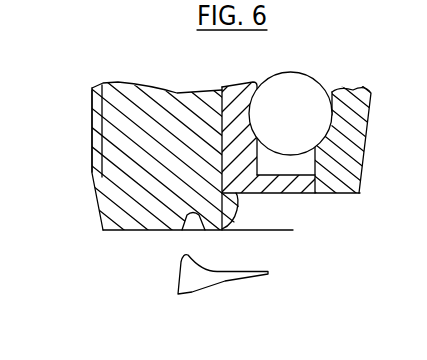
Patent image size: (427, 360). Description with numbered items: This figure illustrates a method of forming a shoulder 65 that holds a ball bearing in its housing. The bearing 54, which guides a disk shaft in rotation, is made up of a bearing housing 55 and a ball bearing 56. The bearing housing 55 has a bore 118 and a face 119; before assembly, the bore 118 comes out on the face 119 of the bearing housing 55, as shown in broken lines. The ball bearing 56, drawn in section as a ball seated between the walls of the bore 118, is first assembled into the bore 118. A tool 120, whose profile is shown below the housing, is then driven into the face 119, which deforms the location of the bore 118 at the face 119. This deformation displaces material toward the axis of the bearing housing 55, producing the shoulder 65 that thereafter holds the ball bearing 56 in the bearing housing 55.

The bearing 54 is at (88, 134).
The bearing housing 55 is at (148, 102).
The ball bearing 56 is at (355, 100).
The shoulder 65 is at (231, 212).
The bore 118 is at (204, 94).
The face 119 is at (123, 231).
The tool 120 is at (198, 275).